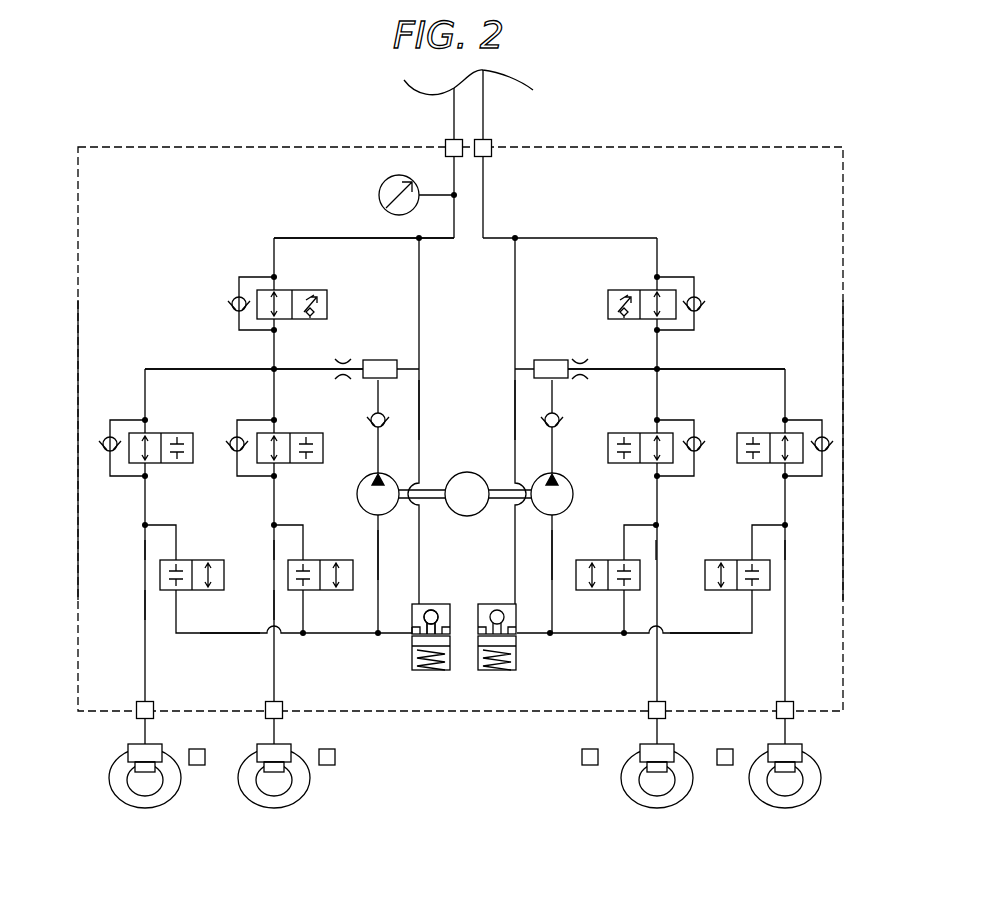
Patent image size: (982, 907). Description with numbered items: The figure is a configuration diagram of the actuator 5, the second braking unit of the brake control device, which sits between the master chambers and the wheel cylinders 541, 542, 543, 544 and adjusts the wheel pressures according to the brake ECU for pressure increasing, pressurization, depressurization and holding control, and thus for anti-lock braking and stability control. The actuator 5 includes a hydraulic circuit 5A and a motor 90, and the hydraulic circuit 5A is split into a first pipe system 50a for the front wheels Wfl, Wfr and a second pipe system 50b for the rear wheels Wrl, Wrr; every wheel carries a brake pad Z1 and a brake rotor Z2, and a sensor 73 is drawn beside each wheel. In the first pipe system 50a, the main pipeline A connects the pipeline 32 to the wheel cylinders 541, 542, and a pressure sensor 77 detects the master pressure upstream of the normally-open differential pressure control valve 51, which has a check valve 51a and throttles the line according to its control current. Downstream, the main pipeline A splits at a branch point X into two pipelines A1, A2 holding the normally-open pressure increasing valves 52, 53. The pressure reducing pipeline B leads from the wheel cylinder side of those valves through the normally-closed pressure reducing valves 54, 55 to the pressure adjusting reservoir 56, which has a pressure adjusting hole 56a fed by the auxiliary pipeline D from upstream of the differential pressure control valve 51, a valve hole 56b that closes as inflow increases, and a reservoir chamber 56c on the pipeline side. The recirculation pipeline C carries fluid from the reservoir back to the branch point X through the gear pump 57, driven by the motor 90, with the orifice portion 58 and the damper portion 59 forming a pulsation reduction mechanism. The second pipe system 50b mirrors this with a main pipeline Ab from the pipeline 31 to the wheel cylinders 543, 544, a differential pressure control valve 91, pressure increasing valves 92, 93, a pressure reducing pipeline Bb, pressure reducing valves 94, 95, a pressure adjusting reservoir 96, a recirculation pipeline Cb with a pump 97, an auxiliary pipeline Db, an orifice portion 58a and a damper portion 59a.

The actuator 5 is at (208, 124).
The hydraulic circuit 5A is at (245, 218).
The first pipe system 50a is at (170, 225).
The second pipe system 50b is at (751, 224).
The pipeline 31 is at (486, 110).
The pipeline 32 is at (452, 115).
The pressure sensor 77 is at (378, 192).
The differential pressure control valve 51 is at (318, 292).
The check valve 51a is at (230, 302).
The differential pressure control valve 91 is at (612, 292).
The pressure increasing valve 52 is at (185, 435).
The pressure increasing valve 53 is at (305, 435).
The pressure increasing valve 92 is at (745, 435).
The pressure increasing valve 93 is at (615, 435).
The pressure reducing valve 54 is at (212, 558).
The pressure reducing valve 55 is at (336, 558).
The pressure reducing valve 94 is at (721, 558).
The pressure reducing valve 95 is at (592, 558).
The pressure adjusting reservoir 56 is at (418, 671).
The pressure adjusting hole 56a is at (421, 602).
The valve hole 56b is at (441, 625).
The reservoir chamber 56c is at (410, 634).
The pressure adjusting reservoir 96 is at (508, 671).
The pump 57 is at (362, 484).
The pump 97 is at (568, 484).
The orifice portion 58 is at (345, 360).
The orifice portion 58a is at (580, 360).
The damper portion 59 is at (382, 360).
The damper portion 59a is at (550, 360).
The motor 90 is at (467, 471).
The sensor 73 is at (199, 766).
The wheel cylinder 541 is at (127, 748).
The wheel cylinder 542 is at (256, 748).
The wheel cylinder 543 is at (639, 748).
The wheel cylinder 544 is at (767, 748).
The brake pad Z1 is at (135, 766).
The brake rotor Z2 is at (130, 788).
The front left wheel Wfl is at (143, 808).
The front right wheel Wfr is at (268, 808).
The rear left wheel Wrl is at (648, 808).
The rear right wheel Wrr is at (768, 808).
The main pipeline A is at (312, 226).
The pipeline A1 is at (143, 605).
The pipeline A2 is at (272, 605).
The pressure reducing pipeline B is at (232, 636).
The recirculation pipeline C is at (379, 560).
The auxiliary pipeline D is at (420, 410).
The branch point X is at (272, 369).
The main pipeline Ab is at (632, 232).
The pressure reducing pipeline Bb is at (694, 636).
The recirculation pipeline Cb is at (552, 560).
The auxiliary pipeline Db is at (515, 410).